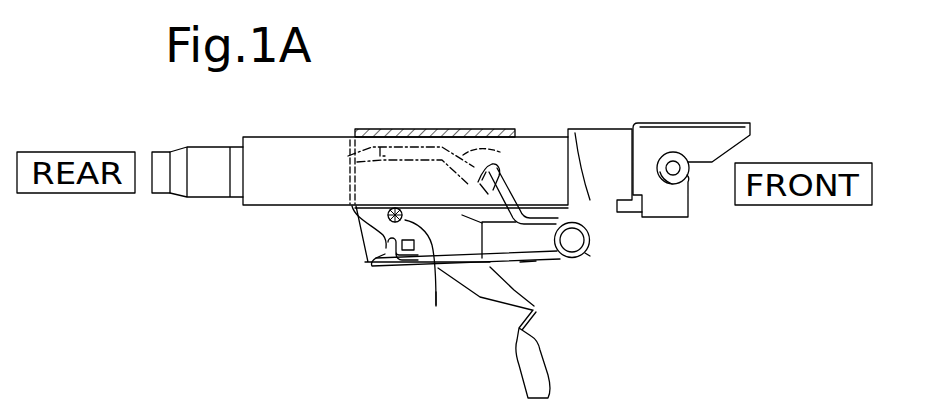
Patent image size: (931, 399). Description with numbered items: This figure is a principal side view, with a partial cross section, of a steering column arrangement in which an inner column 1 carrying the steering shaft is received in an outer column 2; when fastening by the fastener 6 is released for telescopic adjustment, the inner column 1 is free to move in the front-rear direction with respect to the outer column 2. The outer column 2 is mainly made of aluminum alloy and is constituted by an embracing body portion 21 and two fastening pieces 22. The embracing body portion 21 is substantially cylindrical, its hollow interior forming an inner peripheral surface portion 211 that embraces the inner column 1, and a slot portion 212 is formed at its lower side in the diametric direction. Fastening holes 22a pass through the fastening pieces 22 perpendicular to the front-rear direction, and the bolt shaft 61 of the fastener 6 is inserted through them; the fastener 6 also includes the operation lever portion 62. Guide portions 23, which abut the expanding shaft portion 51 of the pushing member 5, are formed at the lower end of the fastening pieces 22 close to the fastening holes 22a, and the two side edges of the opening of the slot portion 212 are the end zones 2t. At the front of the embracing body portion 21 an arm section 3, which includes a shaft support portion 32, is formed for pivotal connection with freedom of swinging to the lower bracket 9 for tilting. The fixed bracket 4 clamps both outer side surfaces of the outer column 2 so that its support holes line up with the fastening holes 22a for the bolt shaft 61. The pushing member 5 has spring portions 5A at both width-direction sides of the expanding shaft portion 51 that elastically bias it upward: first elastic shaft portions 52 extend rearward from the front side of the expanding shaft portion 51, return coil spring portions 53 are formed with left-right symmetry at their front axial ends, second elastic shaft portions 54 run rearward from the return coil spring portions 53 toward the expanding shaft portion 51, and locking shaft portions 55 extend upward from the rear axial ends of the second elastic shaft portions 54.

The inner column 1 is at (197, 147).
The outer column 2 is at (482, 127).
The embracing body portion 21 is at (417, 128).
The inner peripheral surface portion 211 is at (360, 140).
The slot portion 212 is at (496, 236).
The fastening pieces 22 is at (370, 258).
The fastening holes 22a is at (427, 222).
The guide portions 23 is at (407, 247).
The end zones 2t is at (435, 311).
The arm section 3 is at (601, 126).
The shaft support portion 32 is at (492, 155).
The fixed bracket 4 is at (384, 161).
The pushing member 5 is at (552, 262).
The spring portion 5A is at (592, 252).
The expanding shaft portion 51 is at (385, 254).
The first elastic shaft portions 52 is at (528, 262).
The return coil spring portions 53 is at (590, 240).
The second elastic shaft portions 54 is at (518, 207).
The locking shaft portions 55 is at (478, 176).
The fastener 6 is at (385, 224).
The bolt shaft 61 is at (397, 208).
The operation lever portion 62 is at (490, 302).
The lower bracket 9 is at (722, 122).